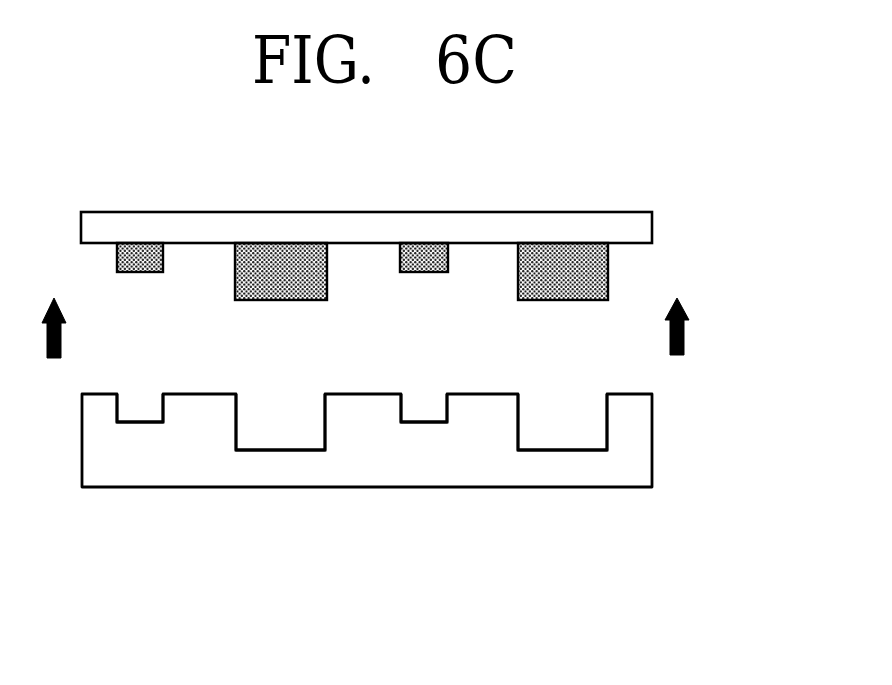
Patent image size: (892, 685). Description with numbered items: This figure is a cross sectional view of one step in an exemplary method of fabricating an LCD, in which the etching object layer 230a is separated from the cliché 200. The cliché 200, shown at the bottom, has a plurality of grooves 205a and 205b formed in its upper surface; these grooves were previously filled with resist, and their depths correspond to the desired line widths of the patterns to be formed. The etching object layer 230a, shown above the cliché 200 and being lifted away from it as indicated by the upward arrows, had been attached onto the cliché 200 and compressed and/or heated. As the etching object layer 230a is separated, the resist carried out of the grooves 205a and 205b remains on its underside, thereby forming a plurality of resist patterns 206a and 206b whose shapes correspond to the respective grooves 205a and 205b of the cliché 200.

The etching object layer 230a is at (642, 229).
The resist pattern 206a is at (428, 253).
The resist pattern 206b is at (557, 252).
The cliché 200 is at (643, 434).
The groove 205a is at (429, 415).
The groove 205b is at (571, 435).